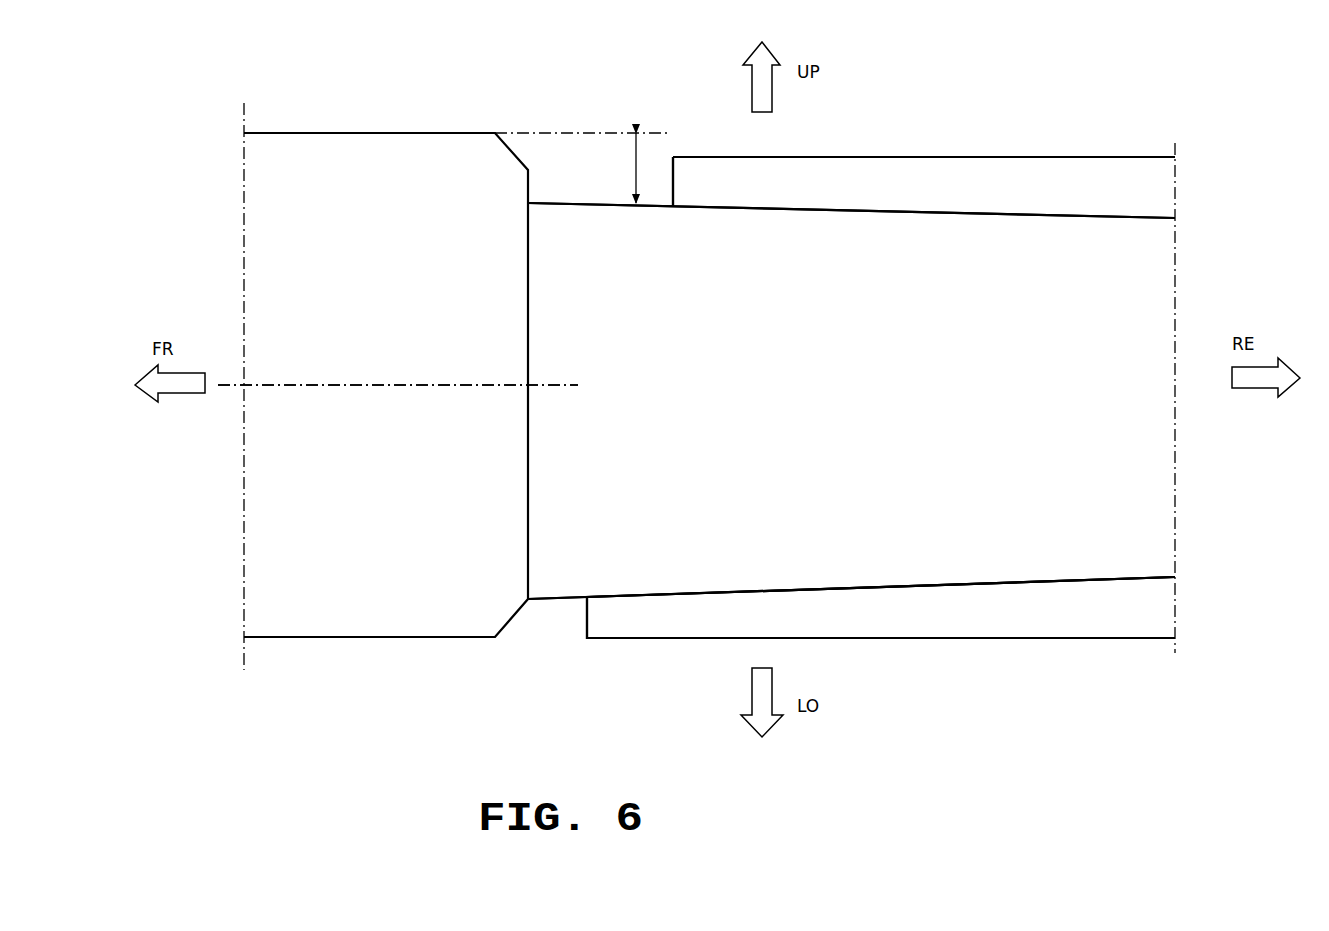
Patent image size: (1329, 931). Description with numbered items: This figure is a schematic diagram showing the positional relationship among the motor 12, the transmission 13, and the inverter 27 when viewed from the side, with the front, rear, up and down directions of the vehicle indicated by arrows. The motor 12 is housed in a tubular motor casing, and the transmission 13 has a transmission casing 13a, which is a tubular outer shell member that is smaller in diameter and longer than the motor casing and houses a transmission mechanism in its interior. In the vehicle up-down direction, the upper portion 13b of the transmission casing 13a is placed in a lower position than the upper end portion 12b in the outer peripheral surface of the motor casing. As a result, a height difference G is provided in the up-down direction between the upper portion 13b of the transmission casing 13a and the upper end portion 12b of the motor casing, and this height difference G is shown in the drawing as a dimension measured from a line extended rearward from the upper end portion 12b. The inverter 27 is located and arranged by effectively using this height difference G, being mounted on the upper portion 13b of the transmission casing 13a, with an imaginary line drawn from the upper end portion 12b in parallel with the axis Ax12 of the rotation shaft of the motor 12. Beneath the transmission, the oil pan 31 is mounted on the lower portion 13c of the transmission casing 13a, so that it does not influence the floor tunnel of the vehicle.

The motor 12 is at (306, 605).
The upper end portion 12b is at (350, 130).
The axis of the rotation shaft of the motor Ax12 is at (288, 392).
The transmission 13 is at (984, 540).
The transmission casing 13a is at (671, 565).
The upper portion of the transmission casing 13b is at (908, 210).
The lower portion of the transmission casing 13c is at (913, 590).
The inverter 27 is at (1087, 170).
The oil pan 31 is at (1087, 612).
The height difference G is at (636, 168).